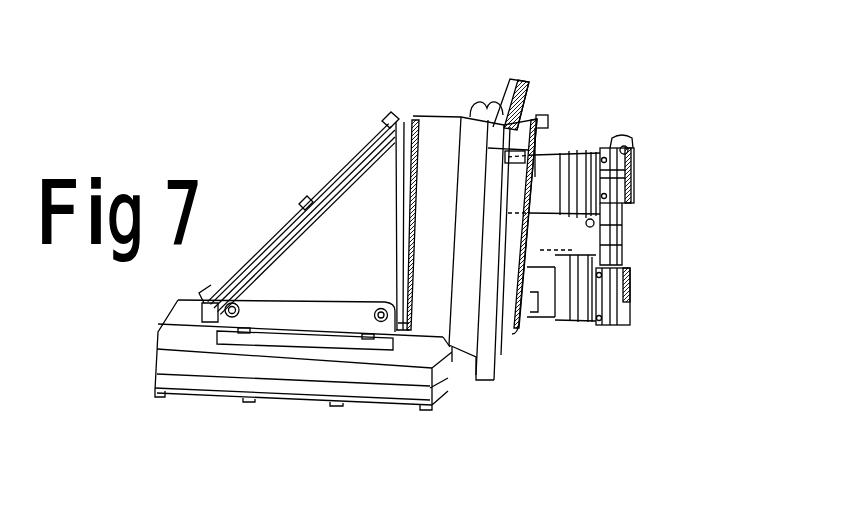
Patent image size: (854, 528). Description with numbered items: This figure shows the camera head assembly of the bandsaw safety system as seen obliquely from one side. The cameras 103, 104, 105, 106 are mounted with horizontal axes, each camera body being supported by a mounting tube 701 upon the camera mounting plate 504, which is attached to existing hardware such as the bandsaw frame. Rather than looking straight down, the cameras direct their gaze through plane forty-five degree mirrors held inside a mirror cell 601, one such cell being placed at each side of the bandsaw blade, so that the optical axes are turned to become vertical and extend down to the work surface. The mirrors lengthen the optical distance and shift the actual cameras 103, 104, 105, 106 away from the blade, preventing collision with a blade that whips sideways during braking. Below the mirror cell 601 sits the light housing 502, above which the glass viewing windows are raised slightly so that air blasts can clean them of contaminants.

The light housing 502 is at (383, 398).
The mirror cell 601 is at (281, 231).
The camera mounting plate 504 is at (511, 75).
The mounting tube 701 is at (597, 130).
The camera 104 is at (633, 145).
The camera 103 is at (620, 212).
The camera 105 is at (627, 288).
The camera 106 is at (612, 325).